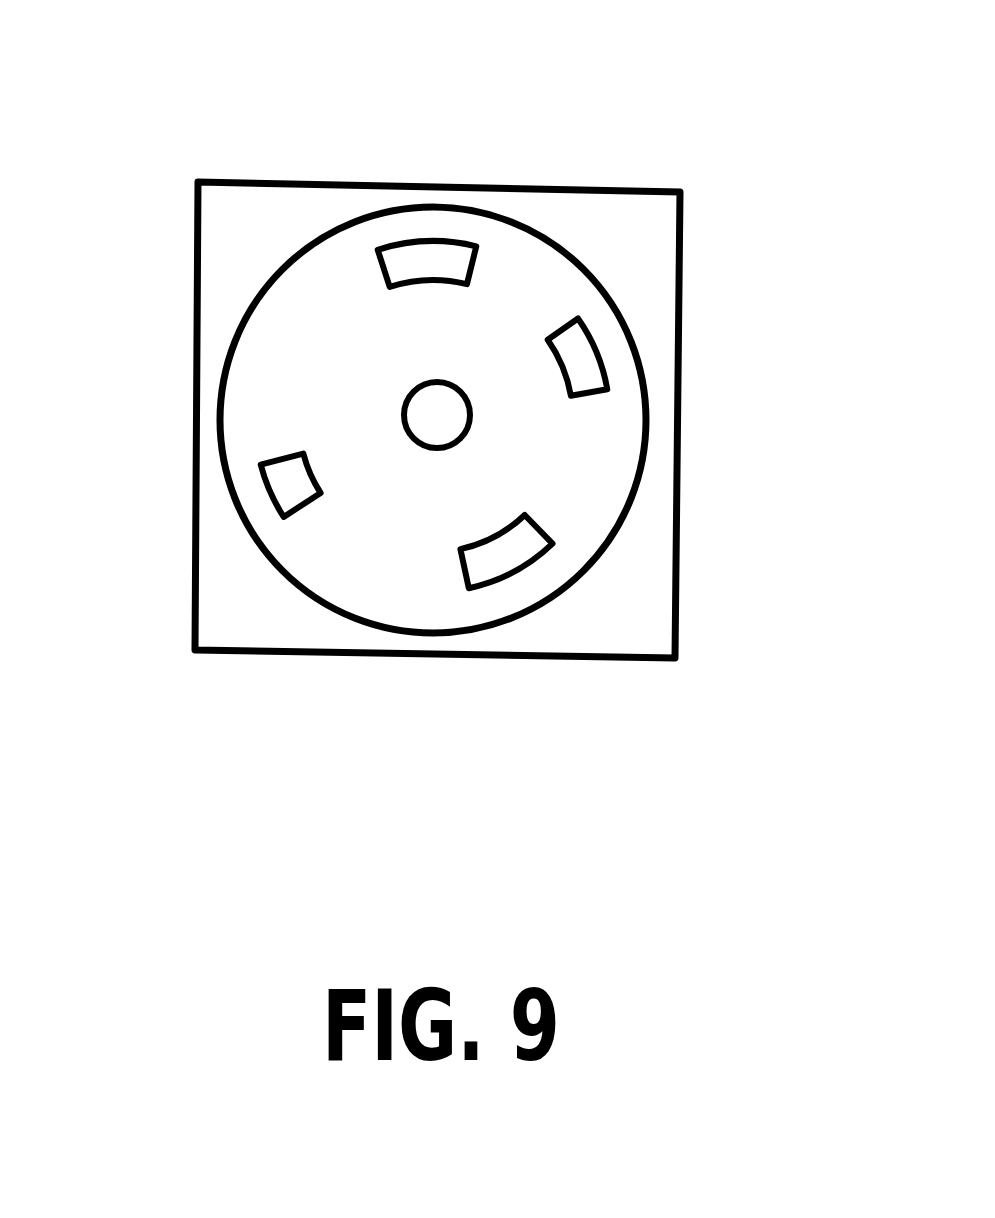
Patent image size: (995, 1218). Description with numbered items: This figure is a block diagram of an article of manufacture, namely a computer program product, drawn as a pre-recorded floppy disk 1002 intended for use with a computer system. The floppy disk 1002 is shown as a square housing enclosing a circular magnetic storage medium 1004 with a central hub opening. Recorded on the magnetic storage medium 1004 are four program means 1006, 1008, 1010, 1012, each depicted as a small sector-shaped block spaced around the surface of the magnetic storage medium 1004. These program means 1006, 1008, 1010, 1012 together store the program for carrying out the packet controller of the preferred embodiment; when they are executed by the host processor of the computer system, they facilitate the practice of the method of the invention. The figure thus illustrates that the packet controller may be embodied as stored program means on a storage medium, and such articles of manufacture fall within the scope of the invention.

The pre-recorded floppy disk 1002 is at (437, 329).
The magnetic storage medium 1004 is at (575, 445).
The program means 1006 is at (580, 358).
The program means 1008 is at (449, 258).
The program means 1010 is at (290, 485).
The program means 1012 is at (495, 557).